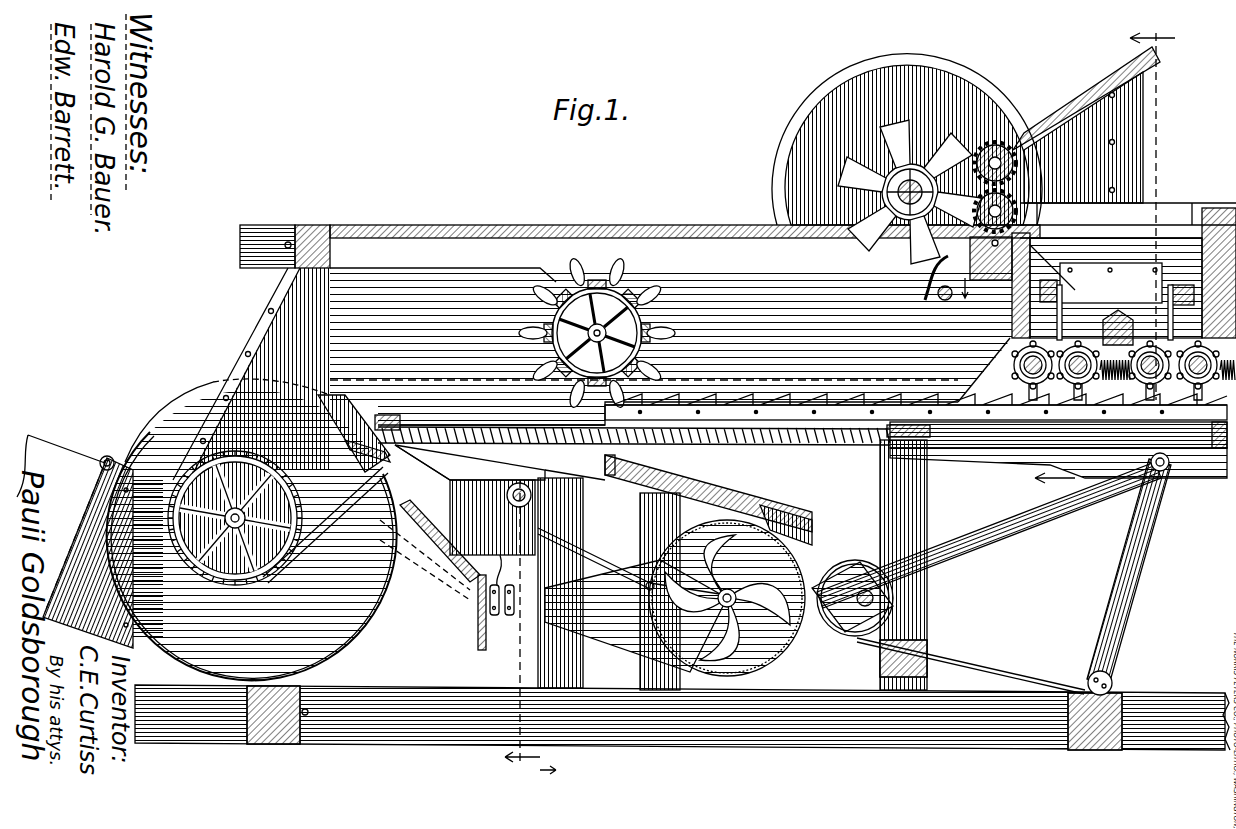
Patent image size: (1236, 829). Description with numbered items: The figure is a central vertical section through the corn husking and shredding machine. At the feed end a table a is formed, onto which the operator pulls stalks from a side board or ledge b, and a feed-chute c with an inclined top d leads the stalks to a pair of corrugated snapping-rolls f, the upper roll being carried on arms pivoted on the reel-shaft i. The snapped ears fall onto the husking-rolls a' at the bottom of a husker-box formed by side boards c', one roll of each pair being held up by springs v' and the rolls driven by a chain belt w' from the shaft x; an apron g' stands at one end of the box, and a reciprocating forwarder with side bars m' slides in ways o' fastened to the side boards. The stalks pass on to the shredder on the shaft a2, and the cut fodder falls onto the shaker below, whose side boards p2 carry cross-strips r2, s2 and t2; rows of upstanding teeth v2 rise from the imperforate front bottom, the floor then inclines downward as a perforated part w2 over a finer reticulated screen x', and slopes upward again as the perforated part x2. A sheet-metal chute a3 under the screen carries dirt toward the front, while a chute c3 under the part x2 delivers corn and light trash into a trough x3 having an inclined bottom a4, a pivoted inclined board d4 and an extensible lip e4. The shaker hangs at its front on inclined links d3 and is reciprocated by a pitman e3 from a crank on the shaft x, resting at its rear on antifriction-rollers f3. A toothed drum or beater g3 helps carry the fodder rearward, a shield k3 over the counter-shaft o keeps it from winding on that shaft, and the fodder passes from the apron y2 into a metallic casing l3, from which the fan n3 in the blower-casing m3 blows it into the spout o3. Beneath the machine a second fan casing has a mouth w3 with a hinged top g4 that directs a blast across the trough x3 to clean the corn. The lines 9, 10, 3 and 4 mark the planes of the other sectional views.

The table a is at (1204, 186).
The husking-rolls a' is at (985, 370).
The shredder shaft a2 is at (900, 232).
The sheet-metal chute a3 is at (785, 522).
The inclined trough bottom a4 is at (500, 615).
The side board or ledge b is at (1230, 349).
The feed-chute c is at (1105, 137).
The side boards of husker-box c' is at (992, 294).
The chute c3 is at (560, 470).
The inclined top of feed-chute d is at (1100, 92).
The inclined links d3 is at (1135, 566).
The inclined board d4 is at (452, 560).
The pitman e3 is at (1000, 538).
The extensible lip e4 is at (400, 482).
The snapping-rolls f is at (985, 156).
The antifriction-rollers f3 is at (565, 507).
The apron g' is at (1116, 288).
The toothed drum or beater g3 is at (615, 300).
The hinged top of fan-casing mouth g4 is at (652, 588).
The reel-shaft i is at (1118, 327).
The shield k3 is at (928, 285).
The metallic casing l3 is at (237, 360).
The side bars of forwarder frame m' is at (990, 309).
The blower-casing m3 is at (335, 628).
The fan or blower n3 is at (285, 585).
The counter-shaft o is at (1082, 398).
The ways o' is at (1117, 284).
The spout o3 is at (104, 462).
The shaker side boards p2 is at (960, 465).
The cross-strip r2 is at (895, 470).
The cross-strip s2 is at (612, 440).
The cross-strip t2 is at (383, 420).
The springs v' is at (1123, 373).
The upstanding teeth v2 is at (963, 418).
The chain belt w' is at (1057, 435).
The inclined perforated shaker bottom w2 is at (680, 430).
The blower mouth w3 is at (580, 615).
The rotary shaft x is at (948, 627).
The reticulated screen x' is at (708, 493).
The upwardly inclined shaker floor x2 is at (497, 432).
The trough x3 is at (478, 630).
The shaker apron y2 is at (320, 435).
The section line 9 is at (1105, 255).
The section line 3 is at (522, 631).
The section line 4 is at (546, 779).
The section line 10 is at (1096, 284).